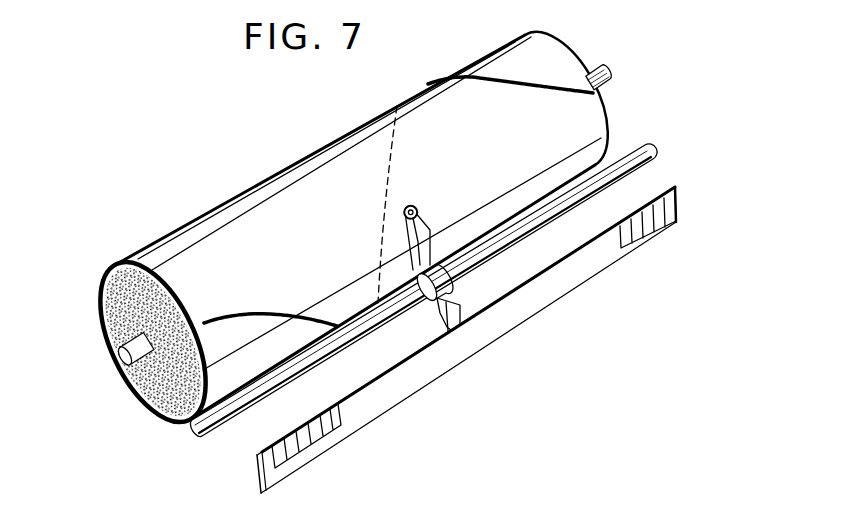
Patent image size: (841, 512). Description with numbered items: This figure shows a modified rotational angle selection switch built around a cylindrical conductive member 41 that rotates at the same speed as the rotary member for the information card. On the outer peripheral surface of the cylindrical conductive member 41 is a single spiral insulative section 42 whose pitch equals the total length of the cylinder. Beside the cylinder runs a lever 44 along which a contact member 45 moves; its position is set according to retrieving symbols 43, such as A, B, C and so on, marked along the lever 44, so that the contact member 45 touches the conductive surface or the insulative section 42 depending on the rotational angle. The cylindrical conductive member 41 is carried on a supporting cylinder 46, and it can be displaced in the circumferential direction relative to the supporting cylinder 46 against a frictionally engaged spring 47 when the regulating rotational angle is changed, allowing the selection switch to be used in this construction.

The cylindrical conductive member 41 is at (288, 193).
The spiral insulative section 42 is at (269, 318).
The retrieving symbols 43 is at (428, 367).
The lever 44 is at (226, 414).
The contact member 45 is at (422, 229).
The supporting cylinder 46 is at (156, 404).
The frictionally engaged spring 47 is at (156, 270).